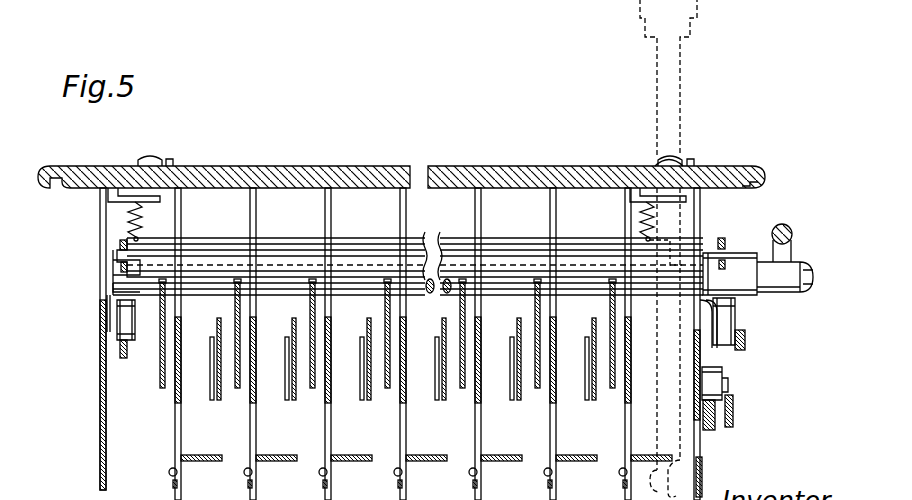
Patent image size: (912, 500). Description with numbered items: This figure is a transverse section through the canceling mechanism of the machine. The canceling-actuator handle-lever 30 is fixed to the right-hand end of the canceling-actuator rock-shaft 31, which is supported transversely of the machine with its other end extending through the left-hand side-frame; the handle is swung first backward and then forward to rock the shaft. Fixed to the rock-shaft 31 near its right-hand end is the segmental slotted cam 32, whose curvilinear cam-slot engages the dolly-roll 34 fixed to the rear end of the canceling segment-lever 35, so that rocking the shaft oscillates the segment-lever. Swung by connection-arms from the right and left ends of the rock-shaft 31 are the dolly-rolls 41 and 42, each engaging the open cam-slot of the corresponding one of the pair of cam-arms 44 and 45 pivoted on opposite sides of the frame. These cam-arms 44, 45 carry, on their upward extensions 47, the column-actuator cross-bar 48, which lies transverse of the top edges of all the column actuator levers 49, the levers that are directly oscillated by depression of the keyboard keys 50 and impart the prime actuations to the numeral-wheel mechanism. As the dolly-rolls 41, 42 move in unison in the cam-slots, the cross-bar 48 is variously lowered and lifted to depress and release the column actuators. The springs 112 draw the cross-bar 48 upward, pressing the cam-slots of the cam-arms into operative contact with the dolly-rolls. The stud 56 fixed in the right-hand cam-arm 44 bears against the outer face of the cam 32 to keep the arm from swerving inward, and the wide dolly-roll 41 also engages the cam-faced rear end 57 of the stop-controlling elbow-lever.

The canceling-actuator handle-lever 30 is at (788, 226).
The canceling-actuator rock-shaft 31 is at (456, 274).
The segmental slotted cam 32 is at (712, 432).
The dolly-roll 34 is at (720, 368).
The canceling segment-lever 35 is at (735, 412).
The dolly-roll 41 is at (730, 318).
The dolly-roll 42 is at (127, 343).
The cam-arm 44 is at (745, 350).
The cam-arm 45 is at (125, 360).
The upward extensions 47 is at (118, 244).
The column-actuator cross-bar 48 is at (460, 236).
The column actuator levers 49 is at (317, 305).
The keyboard keys 50 is at (700, 10).
The stud 56 is at (712, 348).
The cam-faced rear end 57 is at (740, 345).
The springs 112 is at (144, 208).